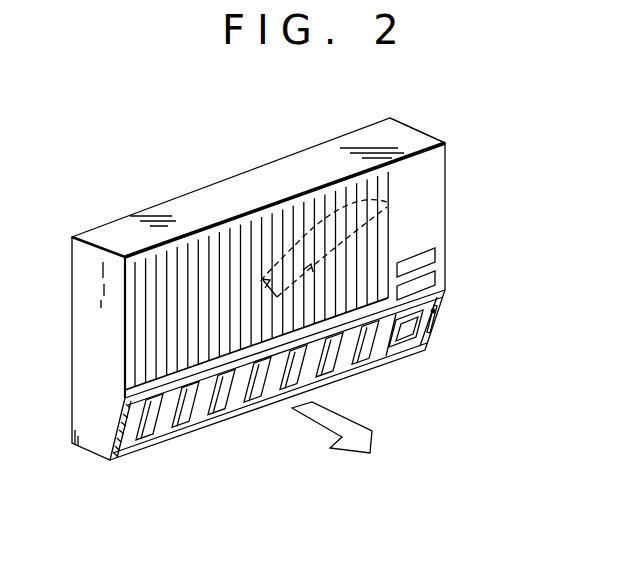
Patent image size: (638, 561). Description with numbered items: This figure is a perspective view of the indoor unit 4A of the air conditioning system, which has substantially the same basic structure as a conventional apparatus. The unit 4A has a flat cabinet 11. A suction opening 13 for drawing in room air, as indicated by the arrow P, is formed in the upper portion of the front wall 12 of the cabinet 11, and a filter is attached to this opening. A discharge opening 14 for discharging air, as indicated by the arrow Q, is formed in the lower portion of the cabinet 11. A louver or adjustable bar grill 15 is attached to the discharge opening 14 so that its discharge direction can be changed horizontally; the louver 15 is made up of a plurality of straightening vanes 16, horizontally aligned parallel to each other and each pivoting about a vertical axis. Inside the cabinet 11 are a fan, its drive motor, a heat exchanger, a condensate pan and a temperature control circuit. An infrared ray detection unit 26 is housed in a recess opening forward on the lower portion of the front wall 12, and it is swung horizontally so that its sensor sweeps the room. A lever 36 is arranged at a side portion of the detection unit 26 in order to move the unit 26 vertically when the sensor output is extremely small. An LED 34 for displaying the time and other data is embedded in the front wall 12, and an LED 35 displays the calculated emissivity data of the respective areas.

The cabinet 11 is at (405, 133).
The front wall 12 is at (436, 187).
The suction opening 13 is at (198, 247).
The discharge opening 14 is at (245, 392).
The louver 15 is at (342, 358).
The straightening vane 16 is at (170, 417).
The infrared ray detection unit 26 is at (407, 332).
The LED 34 is at (430, 262).
The LED 35 is at (430, 290).
The lever 36 is at (435, 312).
The unit 4A is at (258, 180).
The arrow P is at (346, 197).
The arrow Q is at (308, 415).